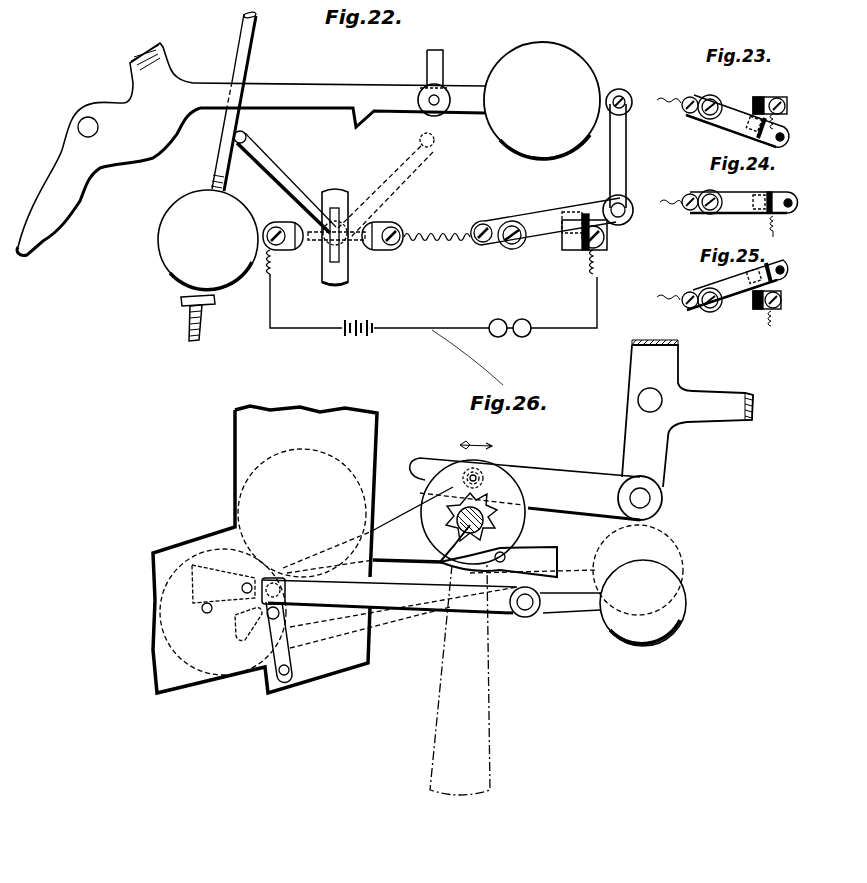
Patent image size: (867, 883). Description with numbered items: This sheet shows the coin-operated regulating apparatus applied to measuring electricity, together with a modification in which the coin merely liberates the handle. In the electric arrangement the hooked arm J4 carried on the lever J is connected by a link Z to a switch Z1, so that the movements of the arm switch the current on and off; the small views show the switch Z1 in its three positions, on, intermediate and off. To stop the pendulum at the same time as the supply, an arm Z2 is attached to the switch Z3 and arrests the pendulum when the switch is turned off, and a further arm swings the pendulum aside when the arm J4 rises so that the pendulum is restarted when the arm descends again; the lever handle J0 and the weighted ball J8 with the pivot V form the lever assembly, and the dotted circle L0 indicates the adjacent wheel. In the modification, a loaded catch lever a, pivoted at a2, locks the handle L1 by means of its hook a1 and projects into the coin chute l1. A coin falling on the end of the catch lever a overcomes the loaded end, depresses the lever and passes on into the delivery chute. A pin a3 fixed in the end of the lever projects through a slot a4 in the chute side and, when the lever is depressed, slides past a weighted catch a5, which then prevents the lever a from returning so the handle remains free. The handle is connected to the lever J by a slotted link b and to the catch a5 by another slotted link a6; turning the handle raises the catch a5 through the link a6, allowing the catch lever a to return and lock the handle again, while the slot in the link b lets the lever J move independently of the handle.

In FIG. 22, the lever handle J0 is at (108, 149).
In FIG. 22, the hooked arm J4 is at (339, 105).
In FIG. 22, the ball weight J8 is at (542, 100).
In FIG. 22, the pivot V is at (443, 66).
In FIG. 22, the link Z is at (626, 150).
In FIG. 22, the switch Z1 is at (632, 226).
In FIG. 23, the switch Z1 is at (722, 105).
In FIG. 24, the switch Z1 is at (730, 198).
In FIG. 25, the switch Z1 is at (727, 306).
In FIG. 22, the arm Z2 is at (270, 168).
In FIG. 22, the switch Z3 is at (340, 196).
In FIG. 26, the lever J is at (685, 430).
In FIG. 26, the slotted link b is at (525, 489).
In FIG. 26, the coin chute l1 is at (235, 466).
In FIG. 26, the wheel L0 is at (318, 462).
In FIG. 26, the handle L1 is at (488, 738).
In FIG. 26, the loaded catch lever a is at (431, 596).
In FIG. 26, the hook a1 is at (452, 578).
In FIG. 26, the pivot a2 is at (527, 608).
In FIG. 26, the pin a3 is at (285, 581).
In FIG. 26, the slot a4 is at (290, 640).
In FIG. 26, the weighted catch a5 is at (227, 603).
In FIG. 26, the slotted link a6 is at (411, 524).